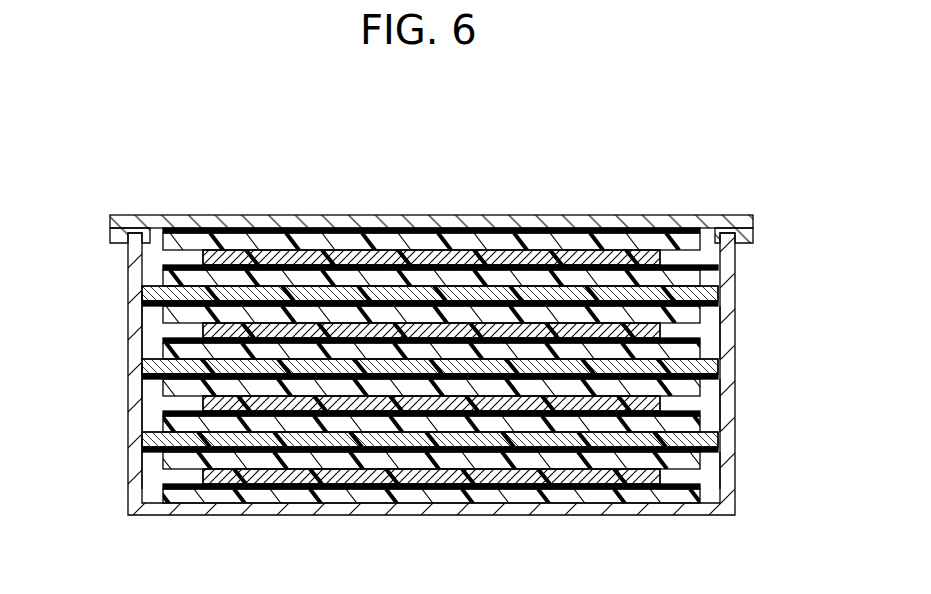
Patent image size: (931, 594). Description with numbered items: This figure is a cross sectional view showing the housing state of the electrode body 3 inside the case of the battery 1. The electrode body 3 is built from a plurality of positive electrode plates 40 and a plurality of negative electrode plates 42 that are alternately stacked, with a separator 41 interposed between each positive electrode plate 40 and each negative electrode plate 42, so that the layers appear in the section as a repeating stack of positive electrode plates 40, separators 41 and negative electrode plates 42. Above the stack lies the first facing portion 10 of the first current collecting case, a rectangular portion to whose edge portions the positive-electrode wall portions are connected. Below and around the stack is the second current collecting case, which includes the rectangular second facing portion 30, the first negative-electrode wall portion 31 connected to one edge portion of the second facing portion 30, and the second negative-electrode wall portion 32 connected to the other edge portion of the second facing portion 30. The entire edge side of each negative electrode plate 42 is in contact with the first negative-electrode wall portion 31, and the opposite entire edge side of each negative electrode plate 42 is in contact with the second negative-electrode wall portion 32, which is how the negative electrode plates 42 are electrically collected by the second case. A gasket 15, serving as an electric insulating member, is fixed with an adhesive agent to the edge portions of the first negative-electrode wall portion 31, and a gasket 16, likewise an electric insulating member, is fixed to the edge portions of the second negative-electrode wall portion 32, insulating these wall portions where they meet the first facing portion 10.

The all-solid-state battery 1 is at (376, 172).
The electrode body 3 is at (494, 202).
The first facing portion 10 is at (618, 215).
The gasket 15 is at (749, 228).
The gasket 16 is at (117, 238).
The second facing portion 30 is at (447, 515).
The first negative-electrode wall portion 31 is at (698, 370).
The second negative-electrode wall portion 32 is at (135, 382).
The positive electrode plate 40 is at (208, 254).
The separator 41 is at (716, 262).
The negative electrode plate 42 is at (152, 293).